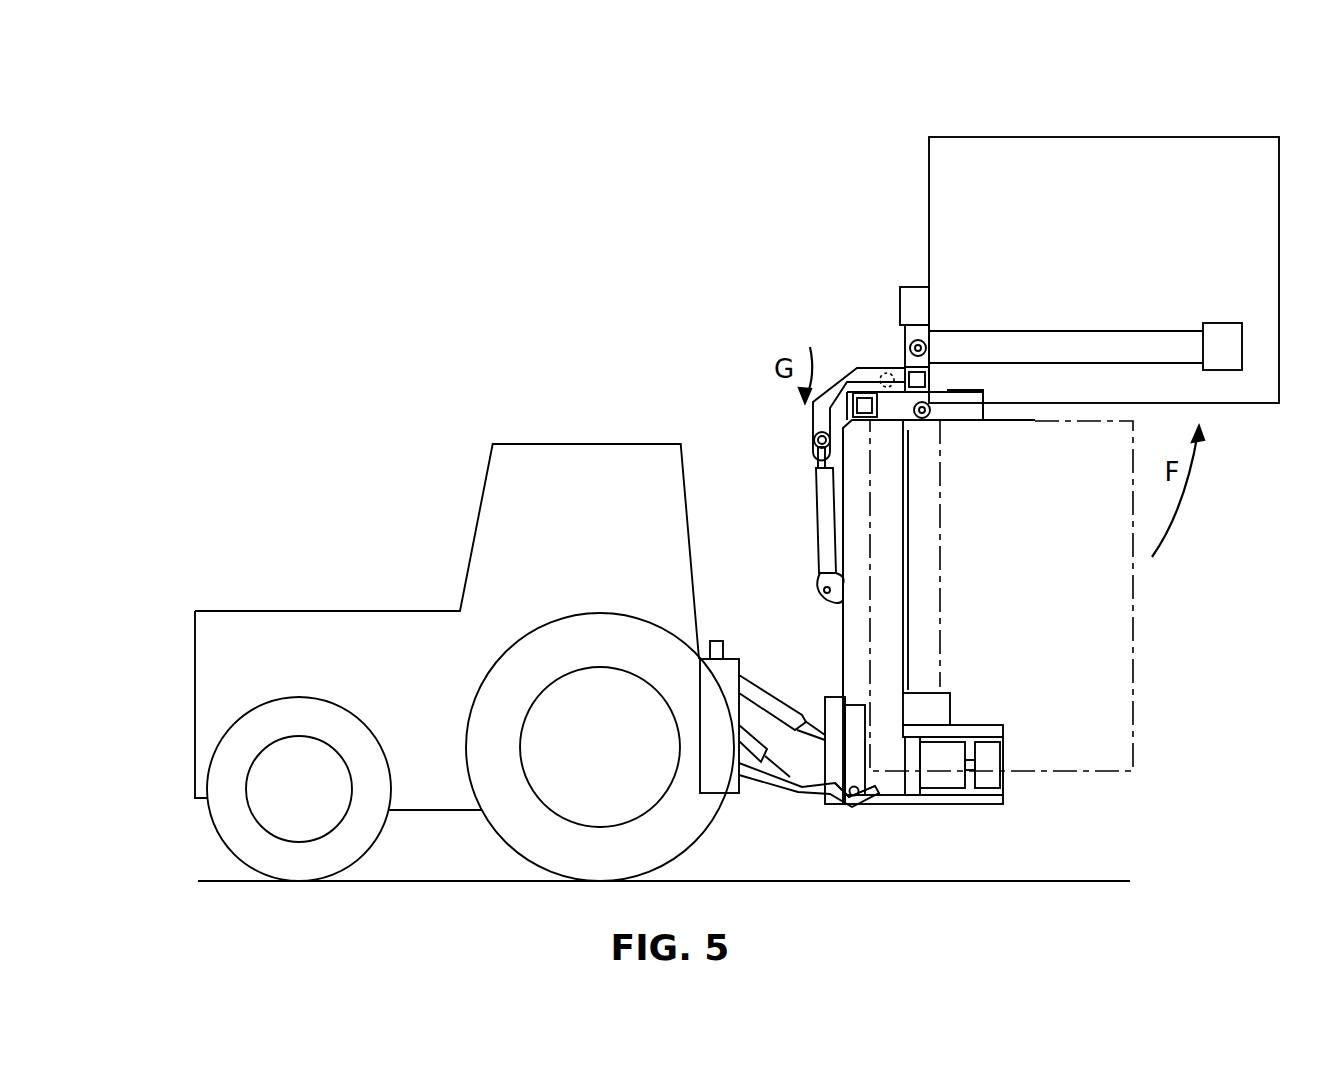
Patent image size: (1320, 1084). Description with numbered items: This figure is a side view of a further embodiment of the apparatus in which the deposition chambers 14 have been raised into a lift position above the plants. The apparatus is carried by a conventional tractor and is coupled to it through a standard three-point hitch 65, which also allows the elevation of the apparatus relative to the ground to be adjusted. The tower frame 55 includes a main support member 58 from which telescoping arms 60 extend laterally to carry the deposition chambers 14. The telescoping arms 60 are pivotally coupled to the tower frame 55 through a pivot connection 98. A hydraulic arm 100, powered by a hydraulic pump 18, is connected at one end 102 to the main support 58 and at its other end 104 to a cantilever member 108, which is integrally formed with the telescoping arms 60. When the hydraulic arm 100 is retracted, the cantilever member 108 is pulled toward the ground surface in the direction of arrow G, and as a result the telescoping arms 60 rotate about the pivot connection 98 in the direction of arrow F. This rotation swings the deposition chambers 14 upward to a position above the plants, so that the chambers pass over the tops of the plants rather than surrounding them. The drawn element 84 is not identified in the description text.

The deposition chamber 14 is at (1142, 137).
The hydraulic pump 18 is at (943, 777).
The tower frame 55 is at (906, 563).
The main support member 58 is at (843, 632).
The telescoping arm 60 is at (930, 378).
The 3-point hitch 65 is at (803, 790).
The control valve 84 is at (722, 640).
The pivot connection 98 is at (888, 374).
The hydraulic arm 100 is at (818, 525).
The end of hydraulic arm 102 is at (822, 589).
The other end of hydraulic arm 104 is at (815, 440).
The cantilever member 108 is at (843, 375).